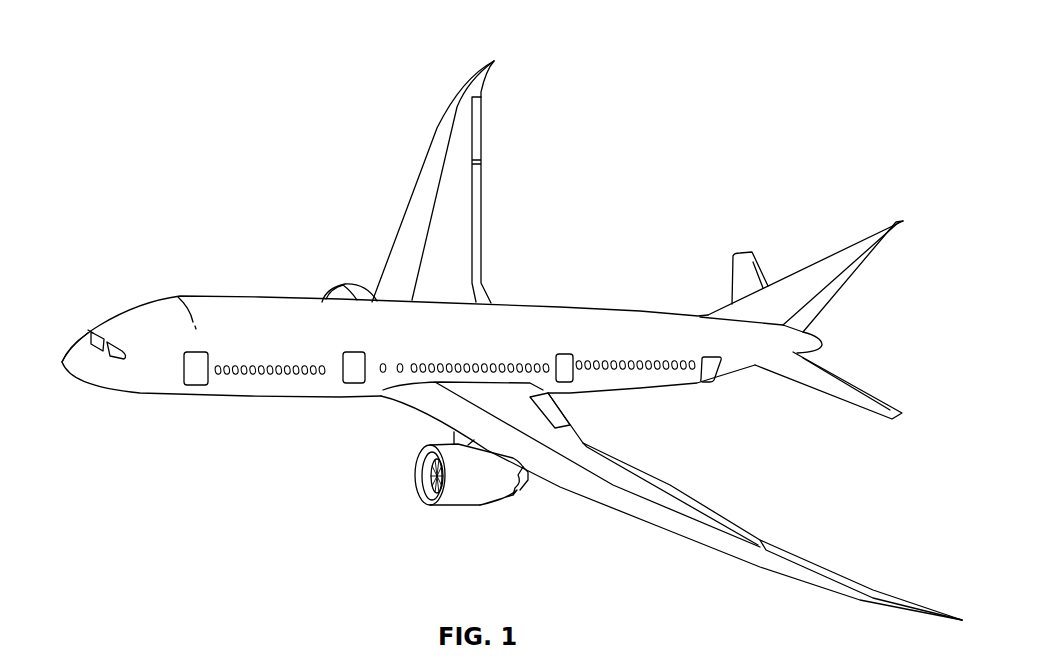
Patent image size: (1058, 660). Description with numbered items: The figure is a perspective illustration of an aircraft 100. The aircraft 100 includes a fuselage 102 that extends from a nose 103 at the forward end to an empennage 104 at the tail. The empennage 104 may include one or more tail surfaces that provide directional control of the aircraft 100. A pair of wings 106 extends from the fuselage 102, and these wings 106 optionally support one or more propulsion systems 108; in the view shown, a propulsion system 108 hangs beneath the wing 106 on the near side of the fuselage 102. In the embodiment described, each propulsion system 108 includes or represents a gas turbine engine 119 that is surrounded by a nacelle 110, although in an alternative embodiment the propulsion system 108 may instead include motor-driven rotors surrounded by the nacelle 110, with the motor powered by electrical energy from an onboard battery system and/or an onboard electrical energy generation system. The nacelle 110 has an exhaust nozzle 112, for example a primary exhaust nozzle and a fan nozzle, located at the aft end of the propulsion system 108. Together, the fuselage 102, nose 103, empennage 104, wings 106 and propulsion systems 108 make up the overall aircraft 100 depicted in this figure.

The aircraft 100 is at (502, 345).
The fuselage 102 is at (562, 306).
The nose 103 is at (60, 367).
The empennage 104 is at (822, 316).
The wings 106 is at (433, 165).
The propulsion system 108 is at (347, 285).
The nacelle 110 is at (467, 507).
The exhaust nozzle 112 is at (530, 485).
The gas turbine engine 119 is at (427, 467).